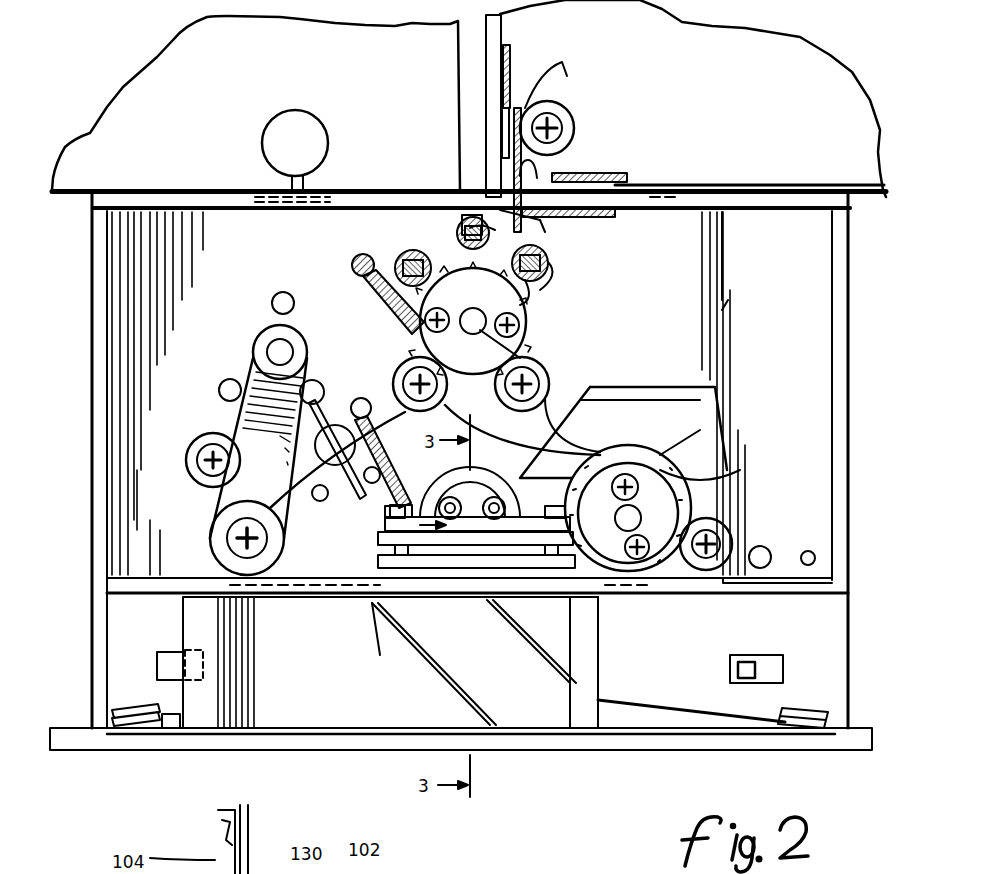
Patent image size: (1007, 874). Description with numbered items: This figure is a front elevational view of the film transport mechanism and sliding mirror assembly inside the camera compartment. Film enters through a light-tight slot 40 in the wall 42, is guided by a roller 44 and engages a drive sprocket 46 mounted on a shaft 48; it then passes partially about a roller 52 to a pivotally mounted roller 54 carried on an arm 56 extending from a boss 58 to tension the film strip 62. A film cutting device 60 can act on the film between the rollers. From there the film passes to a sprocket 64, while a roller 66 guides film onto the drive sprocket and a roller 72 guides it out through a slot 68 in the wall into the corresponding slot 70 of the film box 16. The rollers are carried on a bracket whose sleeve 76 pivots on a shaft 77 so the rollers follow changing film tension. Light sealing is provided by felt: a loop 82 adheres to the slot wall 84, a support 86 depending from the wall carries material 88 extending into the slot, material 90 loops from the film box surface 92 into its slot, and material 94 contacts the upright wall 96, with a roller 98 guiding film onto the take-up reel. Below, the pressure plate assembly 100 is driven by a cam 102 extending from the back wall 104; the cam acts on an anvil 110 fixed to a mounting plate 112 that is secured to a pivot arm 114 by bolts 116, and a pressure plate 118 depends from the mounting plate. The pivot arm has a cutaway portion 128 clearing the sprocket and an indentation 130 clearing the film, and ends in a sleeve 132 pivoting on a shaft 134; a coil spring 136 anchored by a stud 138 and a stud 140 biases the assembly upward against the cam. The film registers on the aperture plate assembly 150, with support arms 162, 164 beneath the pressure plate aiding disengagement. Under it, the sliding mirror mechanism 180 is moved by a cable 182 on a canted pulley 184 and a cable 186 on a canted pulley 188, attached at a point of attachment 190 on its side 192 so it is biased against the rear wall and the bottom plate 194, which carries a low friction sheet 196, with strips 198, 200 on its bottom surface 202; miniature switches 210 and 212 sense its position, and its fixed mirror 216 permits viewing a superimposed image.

The film box 16 is at (787, 66).
The slot 40 is at (420, 228).
The wall 42 is at (320, 212).
The roller 44 is at (400, 255).
The drive sprocket 46 is at (516, 330).
The shaft 48 is at (535, 405).
The roller 52 is at (400, 372).
The roller 54 is at (212, 535).
The arm 56 is at (235, 430).
The boss 58 is at (258, 330).
The film cutting device 60 is at (318, 382).
The film strip 62 is at (417, 430).
The sprocket 64 is at (688, 455).
The roller 66 is at (545, 400).
The slot 68 is at (541, 222).
The slot 70 is at (560, 176).
The roller 72 is at (530, 298).
The sleeve 76 is at (468, 222).
The shaft 77 is at (460, 236).
The loop 82 is at (541, 278).
The slot wall 84 is at (548, 256).
The support 86 is at (498, 298).
The material 88 is at (487, 205).
The material 90 is at (610, 178).
The bracket 92 is at (700, 183).
The material 94 is at (510, 62).
The upright wall 96 is at (501, 28).
The roller 98 is at (572, 120).
The pressure plate assembly 100 is at (385, 527).
The cam 102 is at (477, 472).
The back wall 104 is at (672, 300).
The anvil 110 is at (480, 494).
The mounting plate 112 is at (378, 537).
The pivot arm 114 is at (672, 392).
The bolts 116 is at (600, 598).
The pressure plate 118 is at (378, 560).
The cutaway portion 128 is at (688, 414).
The indentation 130 is at (612, 396).
The sleeve 132 is at (742, 505).
The shaft 134 is at (728, 530).
The coil spring 136 is at (398, 478).
The stud 138 is at (408, 507).
The stud 140 is at (366, 394).
The aperture plate assembly 150 is at (672, 600).
The support arm 162 is at (360, 597).
The support arm 164 is at (378, 650).
The sliding mirror mechanism 180 is at (330, 700).
The cable 182 is at (598, 700).
The canted pulley 184 is at (815, 740).
The cable 186 is at (170, 740).
The canted pulley 188 is at (130, 740).
The point of attachment 190 is at (566, 668).
The side 192 is at (660, 598).
The bottom plate 194 is at (770, 735).
The sheet of low friction material 196 is at (690, 735).
The strip 198 is at (622, 735).
The strip 200 is at (205, 736).
The bottom surface 202 is at (580, 736).
The miniature switch 210 is at (775, 655).
The miniature switch 212 is at (165, 650).
The fixed mirror 216 is at (540, 730).